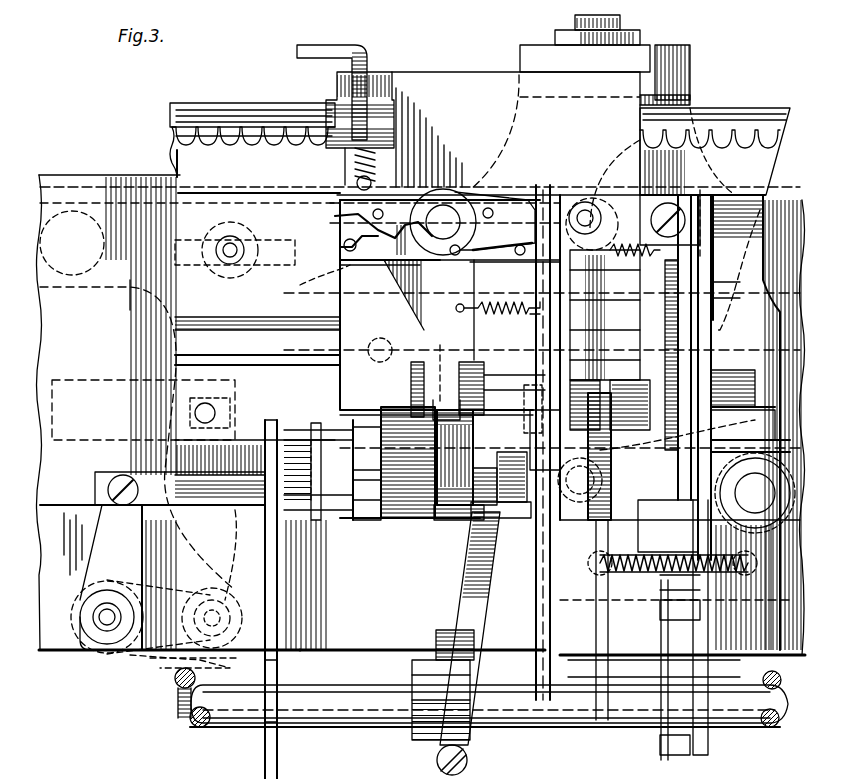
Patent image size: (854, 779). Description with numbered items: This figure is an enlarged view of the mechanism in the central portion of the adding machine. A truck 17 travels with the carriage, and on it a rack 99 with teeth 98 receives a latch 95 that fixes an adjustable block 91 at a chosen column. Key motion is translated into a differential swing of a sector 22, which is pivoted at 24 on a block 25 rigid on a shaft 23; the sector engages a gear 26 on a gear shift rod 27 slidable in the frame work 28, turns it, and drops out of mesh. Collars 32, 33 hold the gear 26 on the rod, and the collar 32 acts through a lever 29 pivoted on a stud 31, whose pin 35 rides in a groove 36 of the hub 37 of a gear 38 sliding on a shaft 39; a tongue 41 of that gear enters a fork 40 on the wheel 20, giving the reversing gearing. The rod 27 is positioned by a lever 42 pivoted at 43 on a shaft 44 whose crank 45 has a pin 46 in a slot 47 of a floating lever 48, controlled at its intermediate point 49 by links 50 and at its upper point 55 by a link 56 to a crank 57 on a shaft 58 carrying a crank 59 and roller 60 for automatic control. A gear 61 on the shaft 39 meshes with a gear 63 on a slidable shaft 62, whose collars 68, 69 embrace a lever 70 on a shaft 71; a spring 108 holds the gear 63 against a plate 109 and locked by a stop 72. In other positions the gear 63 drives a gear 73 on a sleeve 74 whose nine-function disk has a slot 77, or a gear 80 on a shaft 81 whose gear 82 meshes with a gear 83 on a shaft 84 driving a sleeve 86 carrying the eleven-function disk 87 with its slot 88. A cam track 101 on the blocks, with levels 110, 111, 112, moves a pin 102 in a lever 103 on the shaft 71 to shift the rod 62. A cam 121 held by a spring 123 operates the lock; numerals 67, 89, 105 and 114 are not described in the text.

The truck 17 is at (213, 117).
The wheel 20 is at (540, 530).
The sector 22 is at (468, 585).
The shaft 23 is at (518, 724).
The pivot 24 is at (437, 760).
The block 25 is at (436, 640).
The gear 26 is at (450, 520).
The gear shift rod 27 is at (255, 515).
The frame work 28 is at (60, 652).
The lever 29 is at (335, 520).
The stud 31 is at (312, 525).
The collar 32 is at (367, 473).
The collar 33 is at (540, 520).
The pin 35 is at (672, 562).
The groove 36 is at (315, 435).
The hub 37 is at (365, 445).
The gear 38 is at (392, 520).
The shaft 39 is at (285, 440).
The fork 40 is at (512, 410).
The tongue 41 is at (462, 447).
The lever 42 is at (102, 540).
The pivot 43 is at (117, 478).
The shaft 44 is at (90, 612).
The crank 45 is at (165, 665).
The pin 46 is at (222, 618).
The slot 47 is at (180, 595).
The floating lever 48 is at (175, 663).
The intermediate point 49 is at (190, 412).
The links 50 is at (88, 388).
The upper point 55 is at (205, 232).
The link 56 is at (372, 360).
The crank 57 is at (737, 270).
The shaft 58 is at (770, 560).
The crank 59 is at (668, 526).
The roller 60 is at (618, 450).
The gear 61 is at (700, 420).
The shaft 62 is at (740, 380).
The gear 63 is at (752, 386).
The pin 67 is at (488, 380).
The collar 68 is at (478, 365).
The collar 69 is at (412, 375).
The lever 70 is at (439, 364).
The shaft 71 is at (443, 212).
The stop 72 is at (725, 300).
The gear 73 is at (700, 304).
The sleeve 74 is at (726, 285).
The slot 77 is at (726, 269).
The gear 80 is at (668, 400).
The shaft 81 is at (600, 300).
The gear 82 is at (550, 440).
The gear 83 is at (540, 296).
The shaft 84 is at (583, 214).
The sleeve 86 is at (605, 214).
The 11 function disk 87 is at (594, 400).
The slot 88 is at (635, 400).
The block 89 is at (731, 257).
The block 91 is at (470, 88).
The latch 95 is at (343, 50).
The teeth 98 is at (190, 140).
The rack 99 is at (195, 156).
The cam track 101 is at (338, 218).
The pin 102 is at (598, 195).
The lever 103 is at (510, 198).
The bar 105 is at (605, 645).
The spring 108 is at (470, 300).
The plate 109 is at (560, 645).
The first level 110 is at (345, 220).
The second level 111 is at (345, 270).
The third level 112 is at (418, 270).
The clutch 114 is at (410, 408).
The cam 121 is at (665, 205).
The spring 123 is at (725, 210).